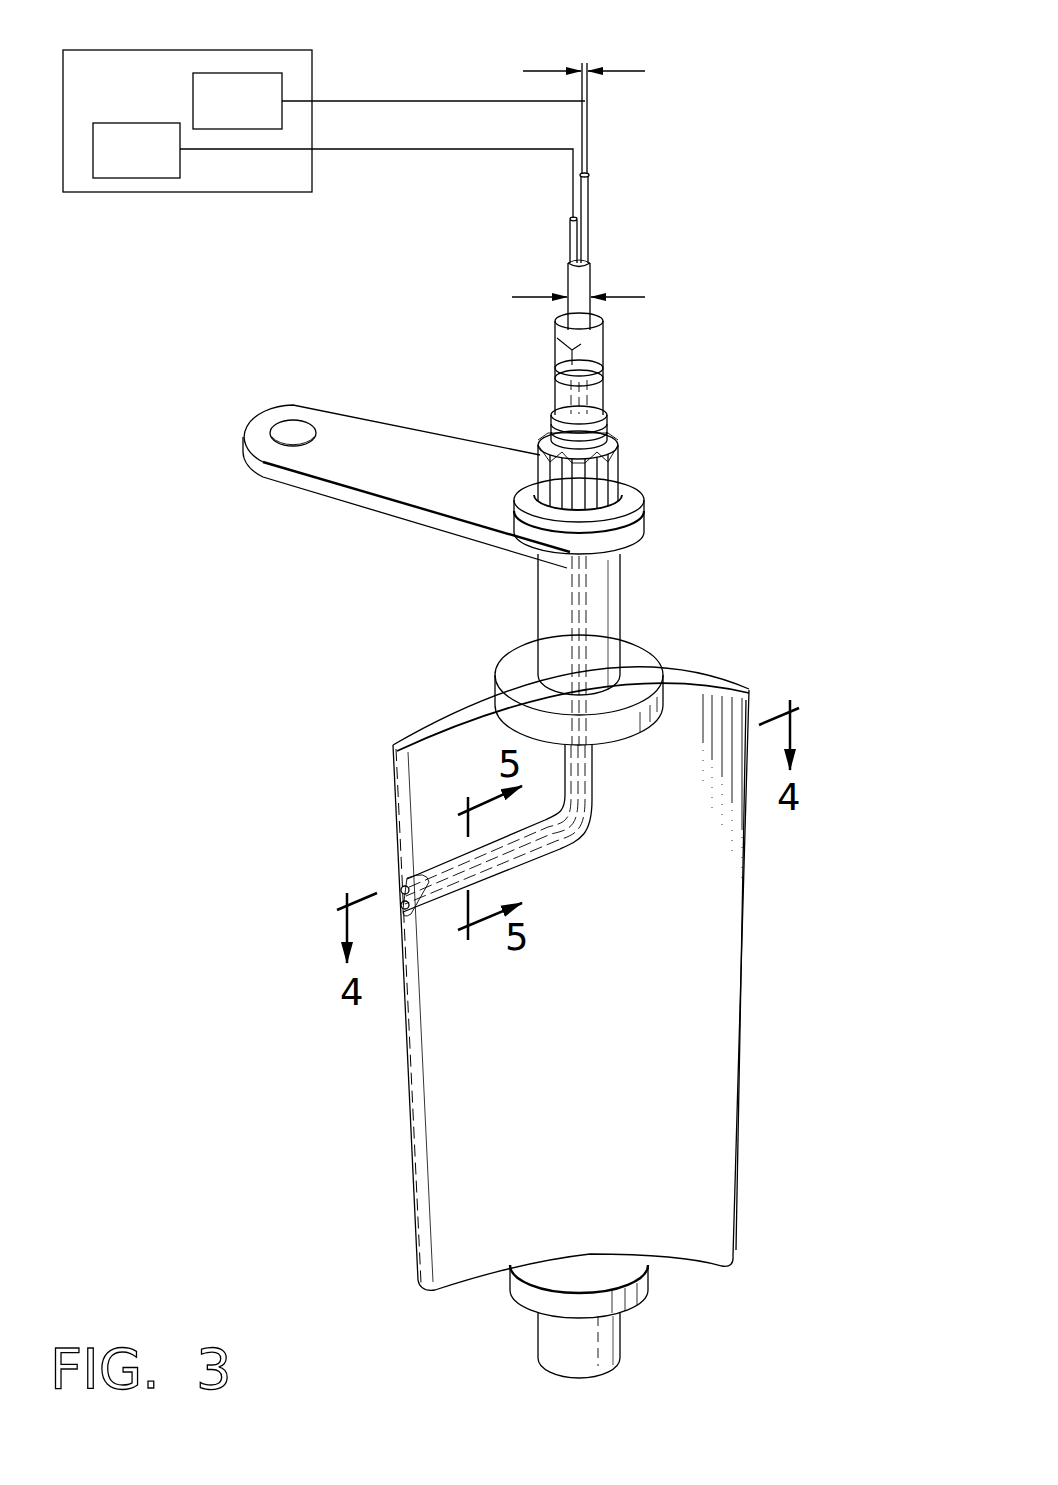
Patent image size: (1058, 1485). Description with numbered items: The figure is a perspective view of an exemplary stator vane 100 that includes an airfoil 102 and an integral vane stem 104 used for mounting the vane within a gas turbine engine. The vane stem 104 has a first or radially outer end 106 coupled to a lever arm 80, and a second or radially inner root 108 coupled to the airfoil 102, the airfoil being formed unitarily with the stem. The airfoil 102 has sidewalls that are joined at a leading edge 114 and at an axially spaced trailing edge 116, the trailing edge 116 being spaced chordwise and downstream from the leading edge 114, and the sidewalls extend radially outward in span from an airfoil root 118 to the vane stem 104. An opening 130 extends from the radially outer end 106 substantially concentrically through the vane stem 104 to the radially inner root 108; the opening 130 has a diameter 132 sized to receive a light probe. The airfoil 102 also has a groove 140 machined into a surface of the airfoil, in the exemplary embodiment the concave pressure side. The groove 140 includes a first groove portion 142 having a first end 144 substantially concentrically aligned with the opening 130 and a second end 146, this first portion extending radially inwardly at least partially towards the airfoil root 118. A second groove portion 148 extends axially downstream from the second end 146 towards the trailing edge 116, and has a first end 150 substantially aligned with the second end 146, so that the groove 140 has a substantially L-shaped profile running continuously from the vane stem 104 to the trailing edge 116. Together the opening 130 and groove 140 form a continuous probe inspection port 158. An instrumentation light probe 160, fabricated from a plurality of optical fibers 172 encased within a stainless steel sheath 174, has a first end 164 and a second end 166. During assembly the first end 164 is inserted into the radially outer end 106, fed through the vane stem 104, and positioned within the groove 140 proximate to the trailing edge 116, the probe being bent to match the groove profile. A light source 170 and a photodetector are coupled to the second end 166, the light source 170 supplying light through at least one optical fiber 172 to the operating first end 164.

The lever arm 80 is at (370, 447).
The stator vane 100 is at (790, 492).
The airfoil 102 is at (571, 979).
The vane stem 104 is at (622, 603).
The radially outer end 106 is at (606, 345).
The radially inner root 108 is at (640, 650).
The leading edge 114 is at (740, 972).
The trailing edge 116 is at (403, 1100).
The airfoil root 118 is at (468, 1278).
The opening 130 is at (605, 325).
The diameter 132 is at (644, 71).
The groove 140 is at (603, 810).
The first groove portion 142 is at (603, 778).
The first end of first groove portion 144 is at (597, 748).
The second end of first groove portion 146 is at (590, 828).
The second groove portion 148 is at (548, 868).
The first end of second groove portion 150 is at (588, 828).
The probe inspection port 158 is at (597, 400).
The instrumentation light probe 160 is at (622, 212).
The light probe first end 164 is at (383, 857).
The light probe second end 166 is at (590, 262).
The light source 170 is at (389, 101).
The optical fibers 172 is at (570, 228).
The sheath 174 is at (567, 282).